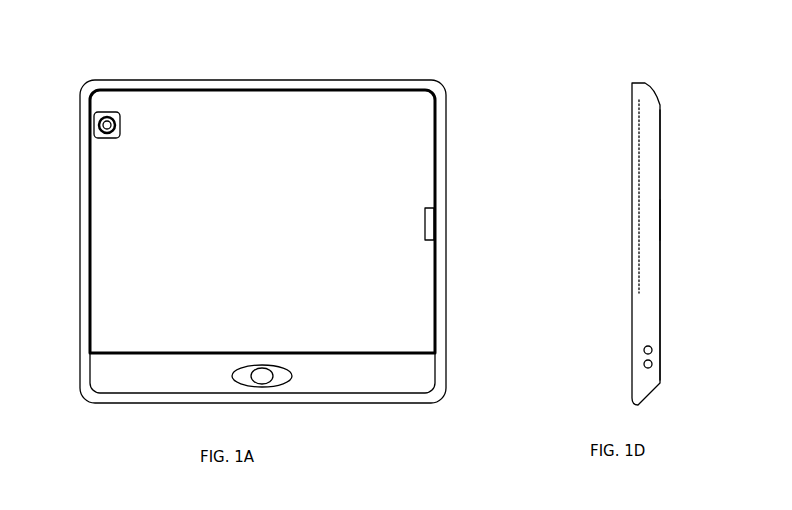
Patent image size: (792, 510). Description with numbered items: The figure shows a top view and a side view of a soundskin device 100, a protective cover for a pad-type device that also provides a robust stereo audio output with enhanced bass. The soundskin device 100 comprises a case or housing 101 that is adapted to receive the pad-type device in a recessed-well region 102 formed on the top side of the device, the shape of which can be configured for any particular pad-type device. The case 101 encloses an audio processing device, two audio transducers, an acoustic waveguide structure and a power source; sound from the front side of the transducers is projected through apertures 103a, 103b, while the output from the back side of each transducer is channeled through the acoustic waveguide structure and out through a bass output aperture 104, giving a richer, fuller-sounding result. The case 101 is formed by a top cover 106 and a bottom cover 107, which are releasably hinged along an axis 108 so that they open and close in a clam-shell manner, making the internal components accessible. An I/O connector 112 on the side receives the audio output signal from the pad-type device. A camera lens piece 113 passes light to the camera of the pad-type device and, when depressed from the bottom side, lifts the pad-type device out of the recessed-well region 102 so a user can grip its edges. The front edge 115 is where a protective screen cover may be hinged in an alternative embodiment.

In FIG. 1A, the soundskin device 100 is at (80, 58).
In FIG. 1D, the soundskin device 100 is at (685, 72).
In FIG. 1A, the case or housing 101 is at (447, 168).
In FIG. 1D, the case or housing 101 is at (661, 168).
In FIG. 1A, the recessed-well region 102 is at (355, 137).
In FIG. 1A, the aperture 103a is at (140, 385).
In FIG. 1A, the aperture 103b is at (373, 384).
In FIG. 1A, the bass output aperture 104 is at (265, 378).
In FIG. 1A, the top cover 106 is at (195, 113).
In FIG. 1D, the top cover 106 is at (628, 178).
In FIG. 1D, the bottom cover 107 is at (653, 200).
In FIG. 1A, the axis 108 is at (66, 96).
In FIG. 1A, the I/O connector 112 is at (428, 225).
In FIG. 1A, the camera lens piece 113 is at (92, 130).
In FIG. 1A, the front edge 115 is at (180, 406).